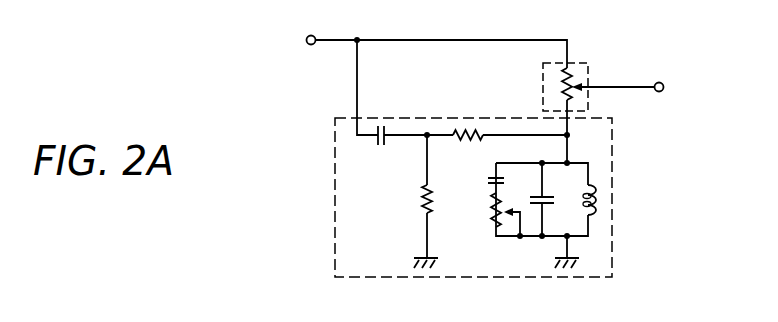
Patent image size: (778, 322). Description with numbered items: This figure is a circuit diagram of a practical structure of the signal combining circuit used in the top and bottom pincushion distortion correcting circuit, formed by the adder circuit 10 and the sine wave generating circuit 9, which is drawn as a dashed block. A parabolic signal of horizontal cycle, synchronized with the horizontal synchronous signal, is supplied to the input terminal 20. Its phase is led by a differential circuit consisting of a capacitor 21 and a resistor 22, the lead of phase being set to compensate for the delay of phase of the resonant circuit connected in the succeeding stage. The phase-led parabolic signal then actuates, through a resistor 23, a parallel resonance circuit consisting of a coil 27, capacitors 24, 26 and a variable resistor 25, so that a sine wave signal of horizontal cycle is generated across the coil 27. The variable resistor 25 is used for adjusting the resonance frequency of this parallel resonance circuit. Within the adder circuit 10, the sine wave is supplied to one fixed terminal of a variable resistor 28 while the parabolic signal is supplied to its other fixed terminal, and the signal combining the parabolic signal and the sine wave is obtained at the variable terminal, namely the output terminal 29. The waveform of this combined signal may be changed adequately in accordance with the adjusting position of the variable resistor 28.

The sine wave generating circuit 9 is at (612, 243).
The adder circuit 10 is at (542, 72).
The input terminal 20 is at (312, 45).
The capacitor 21 is at (378, 148).
The resistor 22 is at (420, 200).
The resistor 23 is at (471, 146).
The capacitor 24 is at (489, 182).
The variable resistor 25 is at (489, 216).
The capacitor 26 is at (530, 201).
The coil 27 is at (582, 198).
The variable resistor 28 is at (557, 89).
The output terminal 29 is at (661, 91).